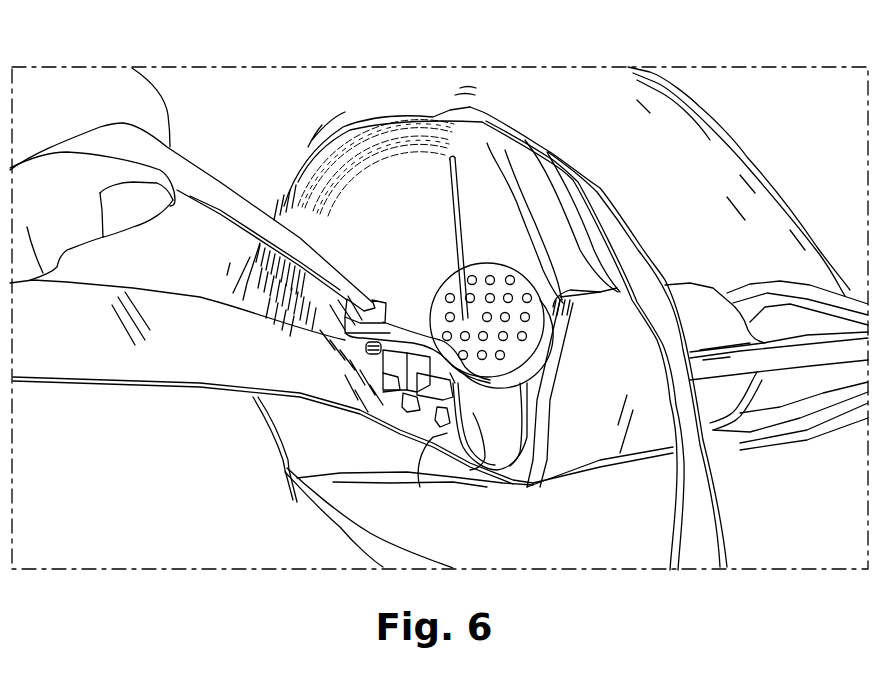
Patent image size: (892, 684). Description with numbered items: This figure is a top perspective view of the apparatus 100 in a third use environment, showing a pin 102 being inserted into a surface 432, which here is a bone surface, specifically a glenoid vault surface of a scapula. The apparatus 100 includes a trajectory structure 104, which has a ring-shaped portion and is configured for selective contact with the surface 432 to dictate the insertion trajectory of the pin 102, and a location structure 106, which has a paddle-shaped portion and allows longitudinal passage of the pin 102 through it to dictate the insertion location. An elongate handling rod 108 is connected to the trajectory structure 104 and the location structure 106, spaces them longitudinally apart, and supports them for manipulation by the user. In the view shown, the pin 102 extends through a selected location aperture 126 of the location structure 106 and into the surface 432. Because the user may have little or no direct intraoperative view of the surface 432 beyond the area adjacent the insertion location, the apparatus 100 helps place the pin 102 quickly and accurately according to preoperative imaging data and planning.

The apparatus 100 is at (213, 157).
The pin 102 is at (457, 213).
The trajectory structure 104 is at (427, 440).
The location structure 106 is at (415, 307).
The handling rod 108 is at (228, 195).
The location aperture 126 is at (472, 318).
The surface 432 is at (487, 423).